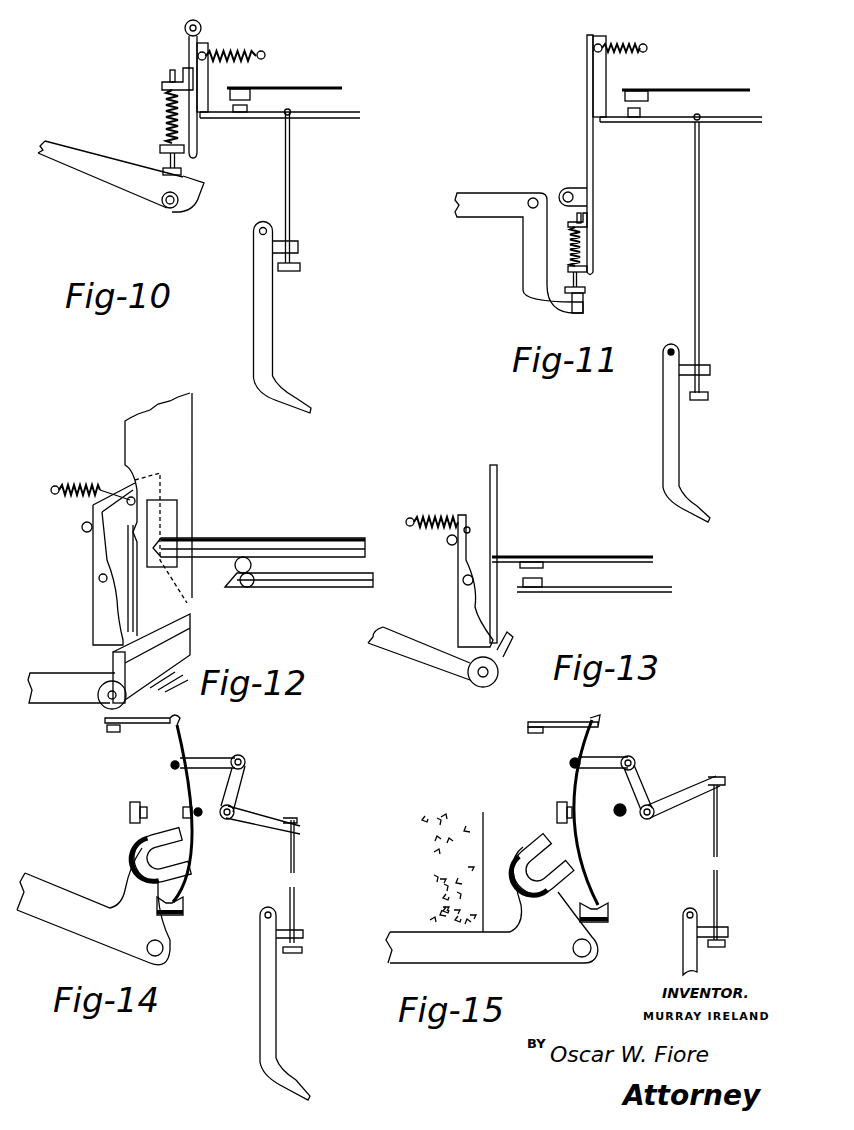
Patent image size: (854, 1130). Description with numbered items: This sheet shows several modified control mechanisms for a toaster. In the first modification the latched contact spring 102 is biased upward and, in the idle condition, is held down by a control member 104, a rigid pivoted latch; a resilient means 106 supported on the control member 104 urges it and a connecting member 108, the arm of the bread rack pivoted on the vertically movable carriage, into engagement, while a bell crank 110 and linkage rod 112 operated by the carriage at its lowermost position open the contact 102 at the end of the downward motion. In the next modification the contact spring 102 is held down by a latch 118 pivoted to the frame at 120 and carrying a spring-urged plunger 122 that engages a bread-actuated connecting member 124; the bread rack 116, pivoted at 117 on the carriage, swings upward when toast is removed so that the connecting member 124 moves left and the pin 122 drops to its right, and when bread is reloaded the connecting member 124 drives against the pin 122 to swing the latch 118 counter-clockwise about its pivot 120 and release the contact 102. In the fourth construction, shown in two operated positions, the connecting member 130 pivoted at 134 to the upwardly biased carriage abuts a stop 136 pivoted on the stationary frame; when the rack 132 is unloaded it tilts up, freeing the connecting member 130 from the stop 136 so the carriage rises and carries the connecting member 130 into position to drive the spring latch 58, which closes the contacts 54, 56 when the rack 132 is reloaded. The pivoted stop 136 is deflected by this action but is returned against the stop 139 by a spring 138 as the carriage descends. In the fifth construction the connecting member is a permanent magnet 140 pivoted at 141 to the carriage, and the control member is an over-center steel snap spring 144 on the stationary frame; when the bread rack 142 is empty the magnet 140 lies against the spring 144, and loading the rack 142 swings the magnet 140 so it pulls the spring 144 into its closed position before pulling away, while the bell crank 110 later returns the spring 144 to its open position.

In FIG. 12, the contact 54 is at (243, 550).
In FIG. 13, the contact 54 is at (553, 557).
In FIG. 12, the contact 56 is at (253, 587).
In FIG. 13, the contact 56 is at (537, 578).
In FIG. 13, the spring latch 58 is at (497, 502).
In FIG. 10, the latched contact spring 102 is at (258, 115).
In FIG. 11, the latched contact spring 102 is at (660, 120).
In FIG. 10, the control member 104 is at (200, 57).
In FIG. 10, the resilient means 106 is at (166, 121).
In FIG. 10, the connecting member 108 is at (192, 200).
In FIG. 10, the bell crank 110 is at (268, 350).
In FIG. 15, the bell crank 110 is at (684, 955).
In FIG. 10, the linkage rod 112 is at (292, 202).
In FIG. 11, the bread rack 116 is at (482, 202).
In FIG. 11, the pivot 117 is at (535, 197).
In FIG. 11, the latch 118 is at (590, 90).
In FIG. 11, the pivot 120 is at (565, 192).
In FIG. 11, the spring-urged plunger 122 is at (587, 277).
In FIG. 11, the connecting member 124 is at (573, 305).
In FIG. 12, the connecting member 130 is at (183, 648).
In FIG. 13, the connecting member 130 is at (505, 652).
In FIG. 12, the rack 132 is at (67, 667).
In FIG. 13, the rack 132 is at (418, 657).
In FIG. 12, the pivot 134 is at (108, 699).
In FIG. 12, the stop 136 is at (100, 627).
In FIG. 13, the stop 136 is at (463, 635).
In FIG. 12, the spring 138 is at (63, 487).
In FIG. 13, the spring 138 is at (422, 517).
In FIG. 12, the stop 139 is at (83, 528).
In FIG. 13, the stop 139 is at (448, 548).
In FIG. 14, the permanent magnet 140 is at (167, 877).
In FIG. 15, the permanent magnet 140 is at (542, 843).
In FIG. 14, the pivot 141 is at (167, 950).
In FIG. 14, the bread rack 142 is at (62, 903).
In FIG. 14, the over-center steel snap spring 144 is at (190, 840).
In FIG. 15, the over-center steel snap spring 144 is at (585, 867).